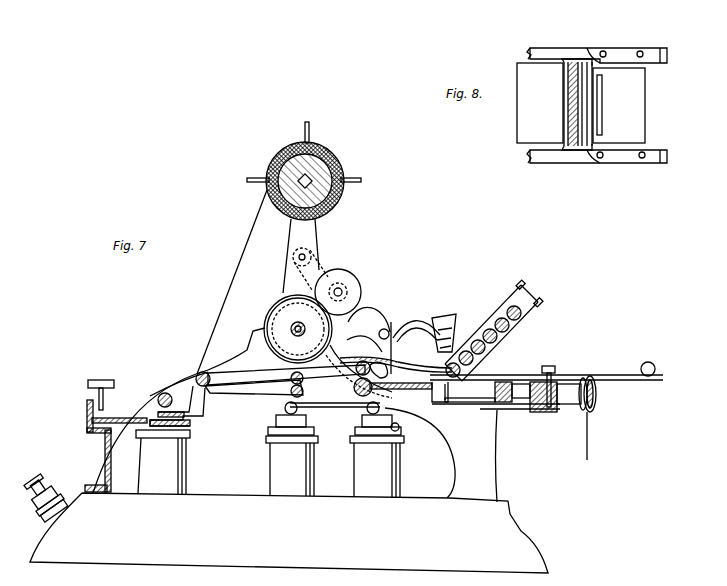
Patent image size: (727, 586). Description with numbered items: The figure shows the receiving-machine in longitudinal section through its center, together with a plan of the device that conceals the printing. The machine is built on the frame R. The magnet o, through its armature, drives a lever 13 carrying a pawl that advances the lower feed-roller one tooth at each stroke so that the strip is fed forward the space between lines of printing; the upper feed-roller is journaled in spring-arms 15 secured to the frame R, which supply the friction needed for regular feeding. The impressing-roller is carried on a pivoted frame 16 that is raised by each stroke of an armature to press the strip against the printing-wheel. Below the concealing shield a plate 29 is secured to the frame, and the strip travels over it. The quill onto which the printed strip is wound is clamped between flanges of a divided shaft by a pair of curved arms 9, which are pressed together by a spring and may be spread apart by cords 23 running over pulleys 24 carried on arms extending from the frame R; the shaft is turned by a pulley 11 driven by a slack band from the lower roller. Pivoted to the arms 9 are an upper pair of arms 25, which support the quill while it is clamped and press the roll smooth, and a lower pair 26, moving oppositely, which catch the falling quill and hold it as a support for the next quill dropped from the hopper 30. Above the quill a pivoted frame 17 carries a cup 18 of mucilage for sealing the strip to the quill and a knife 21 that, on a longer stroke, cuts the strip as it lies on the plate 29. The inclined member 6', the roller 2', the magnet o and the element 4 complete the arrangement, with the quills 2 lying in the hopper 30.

In FIG. 7, the driving arm 6' is at (279, 248).
In FIG. 7, the pivoted frame 16 is at (286, 340).
In FIG. 7, the pulley 11 is at (254, 384).
In FIG. 7, the lever 13 is at (340, 383).
In FIG. 7, the plate 29 is at (401, 395).
In FIG. 7, the pivoted frame 17 is at (368, 346).
In FIG. 7, the knife 21 is at (401, 348).
In FIG. 7, the spring-arms 15 is at (416, 344).
In FIG. 8, the spring-arms 15 is at (623, 105).
In FIG. 7, the cup 18 is at (455, 333).
In FIG. 7, the chute 4 is at (522, 326).
In FIG. 7, the discs 2 is at (483, 341).
In FIG. 7, the rack or hopper 30 is at (548, 296).
In FIG. 7, the curved arms 9 is at (546, 378).
In FIG. 7, the upper pair of arms 25 is at (518, 389).
In FIG. 7, the plate 2' is at (463, 392).
In FIG. 7, the lower pair of arms 26 is at (496, 413).
In FIG. 7, the pulleys 24 is at (596, 397).
In FIG. 7, the cords 23 is at (599, 436).
In FIG. 7, the magnet o is at (292, 466).
In FIG. 8, the frame R is at (597, 105).